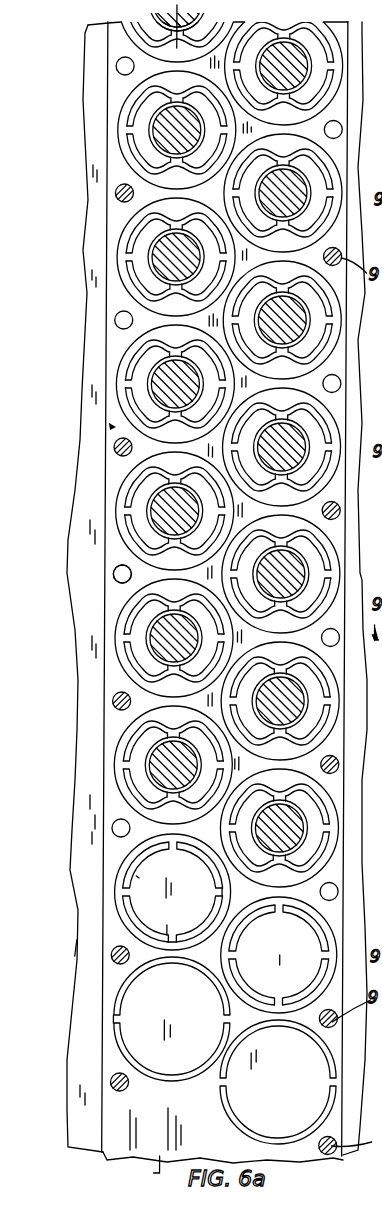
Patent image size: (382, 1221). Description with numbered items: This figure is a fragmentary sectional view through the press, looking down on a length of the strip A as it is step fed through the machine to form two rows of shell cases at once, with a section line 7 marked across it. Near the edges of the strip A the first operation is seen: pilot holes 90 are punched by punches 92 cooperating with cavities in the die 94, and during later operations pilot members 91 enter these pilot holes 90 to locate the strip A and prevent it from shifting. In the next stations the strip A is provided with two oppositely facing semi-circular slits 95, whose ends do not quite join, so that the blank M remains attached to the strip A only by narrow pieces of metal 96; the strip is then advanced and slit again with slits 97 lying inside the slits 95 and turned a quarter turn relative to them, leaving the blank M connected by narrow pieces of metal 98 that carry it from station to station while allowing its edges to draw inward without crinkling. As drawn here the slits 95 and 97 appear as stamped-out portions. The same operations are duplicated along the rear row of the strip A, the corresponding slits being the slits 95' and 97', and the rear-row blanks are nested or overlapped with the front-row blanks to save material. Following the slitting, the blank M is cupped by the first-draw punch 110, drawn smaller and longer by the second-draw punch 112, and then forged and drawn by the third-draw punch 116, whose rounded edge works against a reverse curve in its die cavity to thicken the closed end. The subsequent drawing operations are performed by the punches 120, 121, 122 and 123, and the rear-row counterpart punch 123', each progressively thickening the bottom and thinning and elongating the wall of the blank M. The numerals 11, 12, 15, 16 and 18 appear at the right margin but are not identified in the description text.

The section line 7- 7 is at (173, 4).
The punch 123 is at (192, 15).
The punch 123' is at (295, 63).
The punch 122 is at (172, 117).
The punch 121 is at (165, 254).
The punch 120 is at (165, 382).
The punch 116 is at (160, 508).
The punch 112 is at (155, 637).
The punch 110 is at (155, 764).
The slits 97 is at (172, 892).
The slits 97' is at (278, 955).
The narrow pieces of metal 98 is at (225, 890).
The semi-circular slots or slits 95 is at (172, 1019).
The semi-circular slots or slits 95' is at (277, 1082).
The narrow pieces of metal 96 is at (125, 1017).
The pilot members 91 is at (121, 192).
The punches 92 is at (112, 1083).
The pilot holes 90 is at (119, 577).
The die 94 is at (82, 948).
The blank M is at (143, 877).
The strip A is at (115, 426).
The contact element 16 is at (375, 131).
The contact element 15 is at (375, 301).
The contact element 18 is at (375, 394).
The contact element 11 is at (375, 641).
The contact element 12 is at (374, 862).